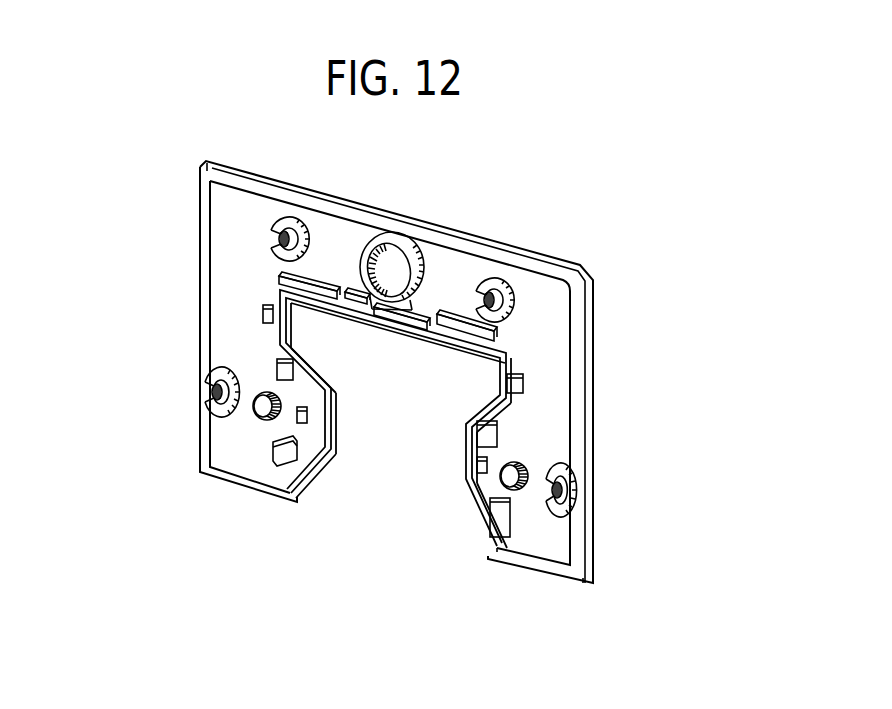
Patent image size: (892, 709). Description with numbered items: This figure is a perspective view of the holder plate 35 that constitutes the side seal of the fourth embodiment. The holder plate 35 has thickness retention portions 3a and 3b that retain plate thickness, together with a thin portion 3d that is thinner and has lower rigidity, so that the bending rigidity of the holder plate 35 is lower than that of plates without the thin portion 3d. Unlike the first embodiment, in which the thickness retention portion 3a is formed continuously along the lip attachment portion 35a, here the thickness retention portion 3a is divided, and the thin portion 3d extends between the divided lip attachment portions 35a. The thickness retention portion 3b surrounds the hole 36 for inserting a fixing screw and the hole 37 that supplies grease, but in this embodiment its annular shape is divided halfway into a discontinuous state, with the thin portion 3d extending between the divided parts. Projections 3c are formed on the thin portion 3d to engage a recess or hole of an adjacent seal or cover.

The holder plate 35 is at (606, 261).
The lip attachment portion 35a is at (310, 470).
The thickness retention portion 3a is at (203, 213).
The thickness retention portion 3b is at (290, 220).
The projection 3c is at (257, 408).
The thin portion 3d is at (554, 343).
The hole 36 is at (300, 233).
The hole 37 is at (392, 262).